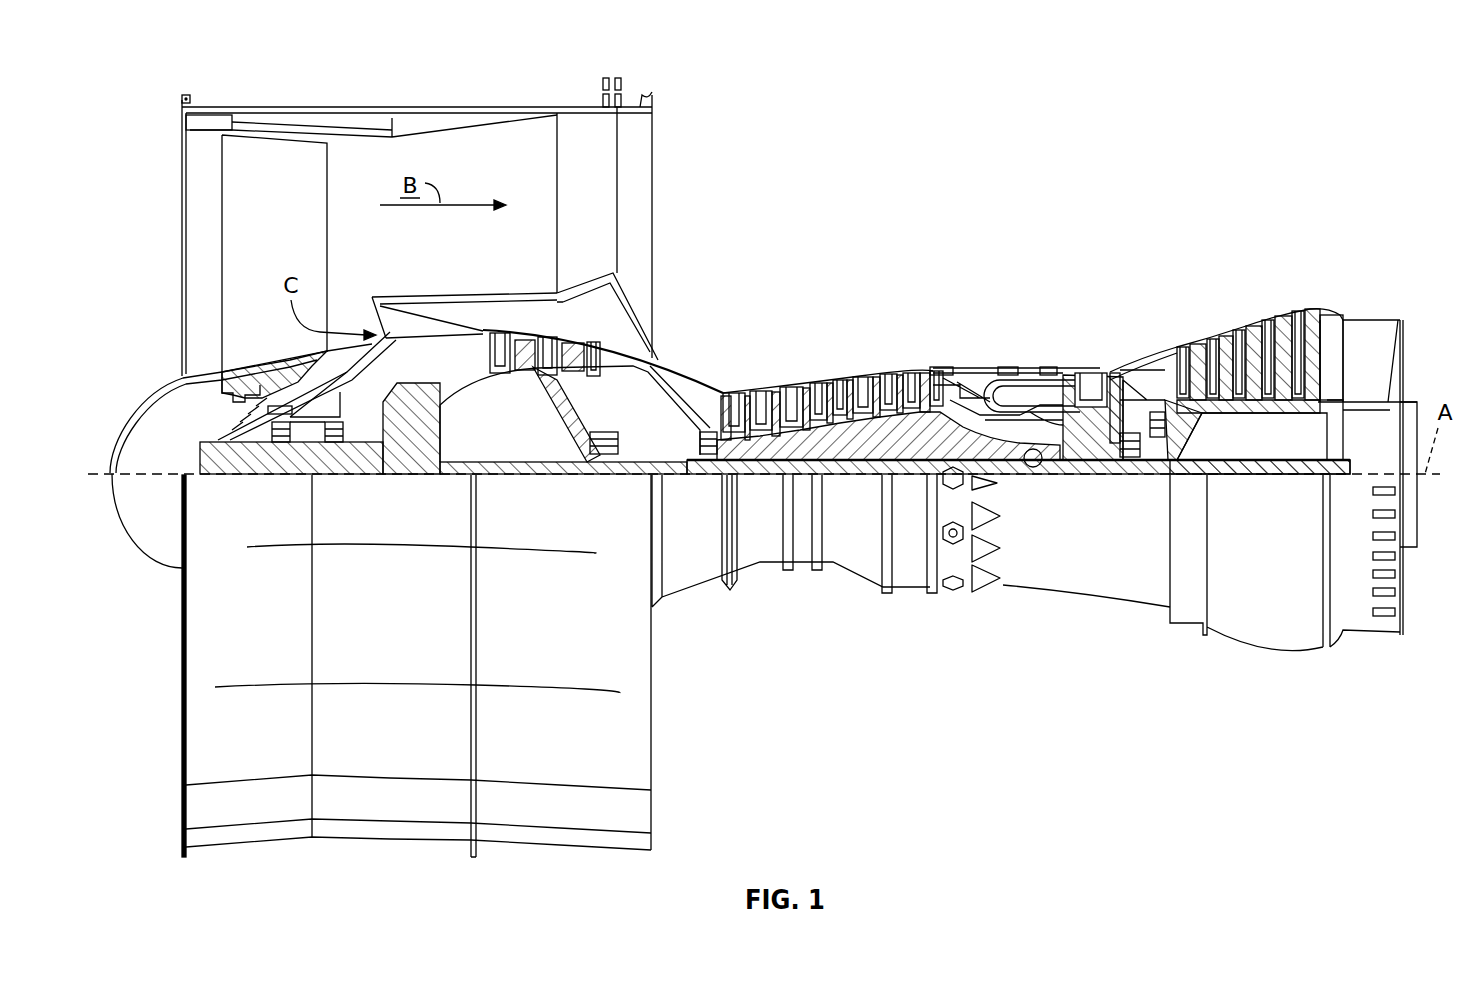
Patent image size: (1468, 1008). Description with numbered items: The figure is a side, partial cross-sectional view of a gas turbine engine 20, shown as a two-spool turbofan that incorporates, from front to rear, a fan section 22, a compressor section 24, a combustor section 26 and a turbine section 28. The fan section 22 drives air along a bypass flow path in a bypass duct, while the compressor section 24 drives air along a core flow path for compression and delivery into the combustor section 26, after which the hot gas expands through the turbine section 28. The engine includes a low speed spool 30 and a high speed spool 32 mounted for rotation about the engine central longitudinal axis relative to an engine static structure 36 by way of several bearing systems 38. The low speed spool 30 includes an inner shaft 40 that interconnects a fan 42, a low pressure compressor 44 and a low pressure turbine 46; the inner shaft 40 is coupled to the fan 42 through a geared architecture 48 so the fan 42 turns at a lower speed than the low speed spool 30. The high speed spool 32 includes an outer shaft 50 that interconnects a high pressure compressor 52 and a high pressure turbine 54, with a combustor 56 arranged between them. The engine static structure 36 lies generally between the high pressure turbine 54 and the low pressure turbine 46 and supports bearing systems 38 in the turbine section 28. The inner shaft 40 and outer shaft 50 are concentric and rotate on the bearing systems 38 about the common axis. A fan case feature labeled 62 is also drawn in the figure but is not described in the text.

The gas turbine engine 20 is at (1224, 142).
The fan section 22 is at (448, 128).
The compressor section 24 is at (831, 332).
The combustor section 26 is at (1006, 332).
The turbine section 28 is at (1156, 318).
The low speed spool 30 is at (871, 481).
The high speed spool 32 is at (930, 405).
The engine static structure 36 is at (910, 599).
The bearing systems 38 is at (705, 427).
The inner shaft 40 is at (665, 480).
The fan 42 is at (268, 226).
The low pressure compressor 44 is at (567, 352).
The low pressure turbine 46 is at (1255, 338).
The geared architecture 48 is at (415, 447).
The outer shaft 50 is at (1040, 458).
The high pressure compressor 52 is at (825, 440).
The high pressure turbine 54 is at (1093, 370).
The combustor 56 is at (1015, 395).
The fan case 62 is at (198, 142).